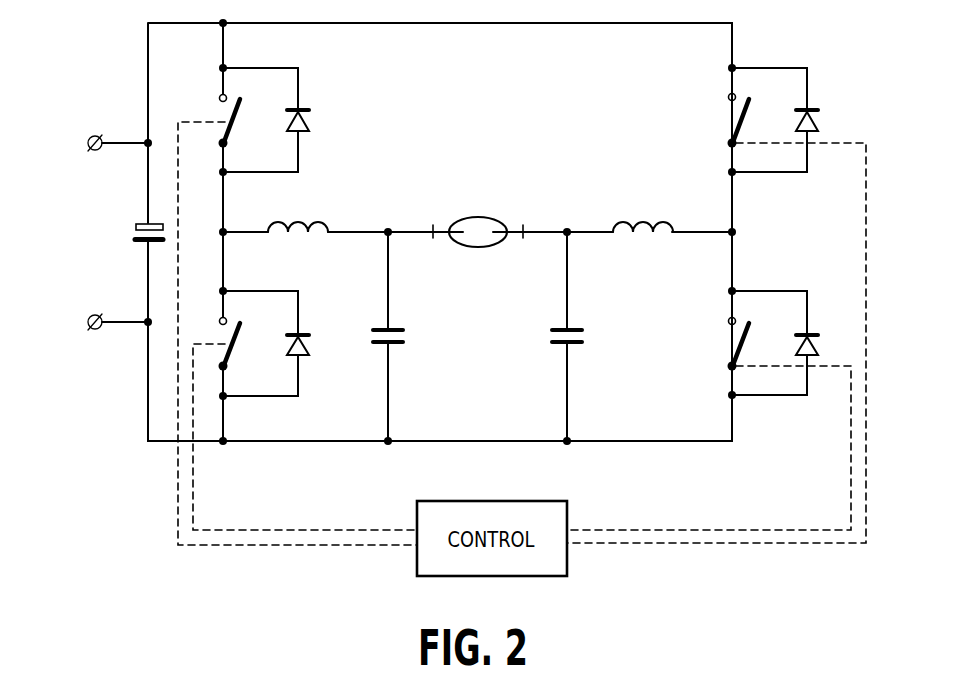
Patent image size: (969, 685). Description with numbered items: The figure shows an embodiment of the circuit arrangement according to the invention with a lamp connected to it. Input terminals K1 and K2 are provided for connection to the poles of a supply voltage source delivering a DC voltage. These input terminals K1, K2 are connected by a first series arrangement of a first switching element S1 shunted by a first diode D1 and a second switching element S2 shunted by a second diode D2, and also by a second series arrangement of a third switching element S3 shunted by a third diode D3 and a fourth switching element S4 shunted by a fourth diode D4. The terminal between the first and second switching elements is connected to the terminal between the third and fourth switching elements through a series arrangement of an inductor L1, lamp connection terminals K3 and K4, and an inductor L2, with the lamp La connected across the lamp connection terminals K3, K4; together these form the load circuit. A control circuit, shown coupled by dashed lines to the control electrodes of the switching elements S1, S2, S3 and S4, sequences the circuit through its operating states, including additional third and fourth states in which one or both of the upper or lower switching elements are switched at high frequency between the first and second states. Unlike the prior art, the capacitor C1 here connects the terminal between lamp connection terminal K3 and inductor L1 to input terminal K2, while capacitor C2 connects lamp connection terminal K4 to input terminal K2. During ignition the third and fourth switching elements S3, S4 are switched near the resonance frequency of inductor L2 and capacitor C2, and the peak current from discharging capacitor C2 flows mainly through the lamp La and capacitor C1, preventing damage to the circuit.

The input terminal K1 is at (100, 139).
The input terminal K2 is at (100, 318).
The lamp connection terminal K3 is at (431, 240).
The lamp connection terminal K4 is at (525, 240).
The first switching element S1 is at (242, 120).
The second switching element S2 is at (242, 343).
The third switching element S3 is at (751, 120).
The fourth switching element S4 is at (751, 343).
The first diode D1 is at (285, 120).
The second diode D2 is at (285, 343).
The third diode D3 is at (792, 120).
The fourth diode D4 is at (792, 343).
The inductor L1 is at (298, 246).
The inductor L2 is at (643, 246).
The lamp La is at (478, 218).
The capacitor C1 is at (404, 336).
The capacitor C2 is at (583, 336).